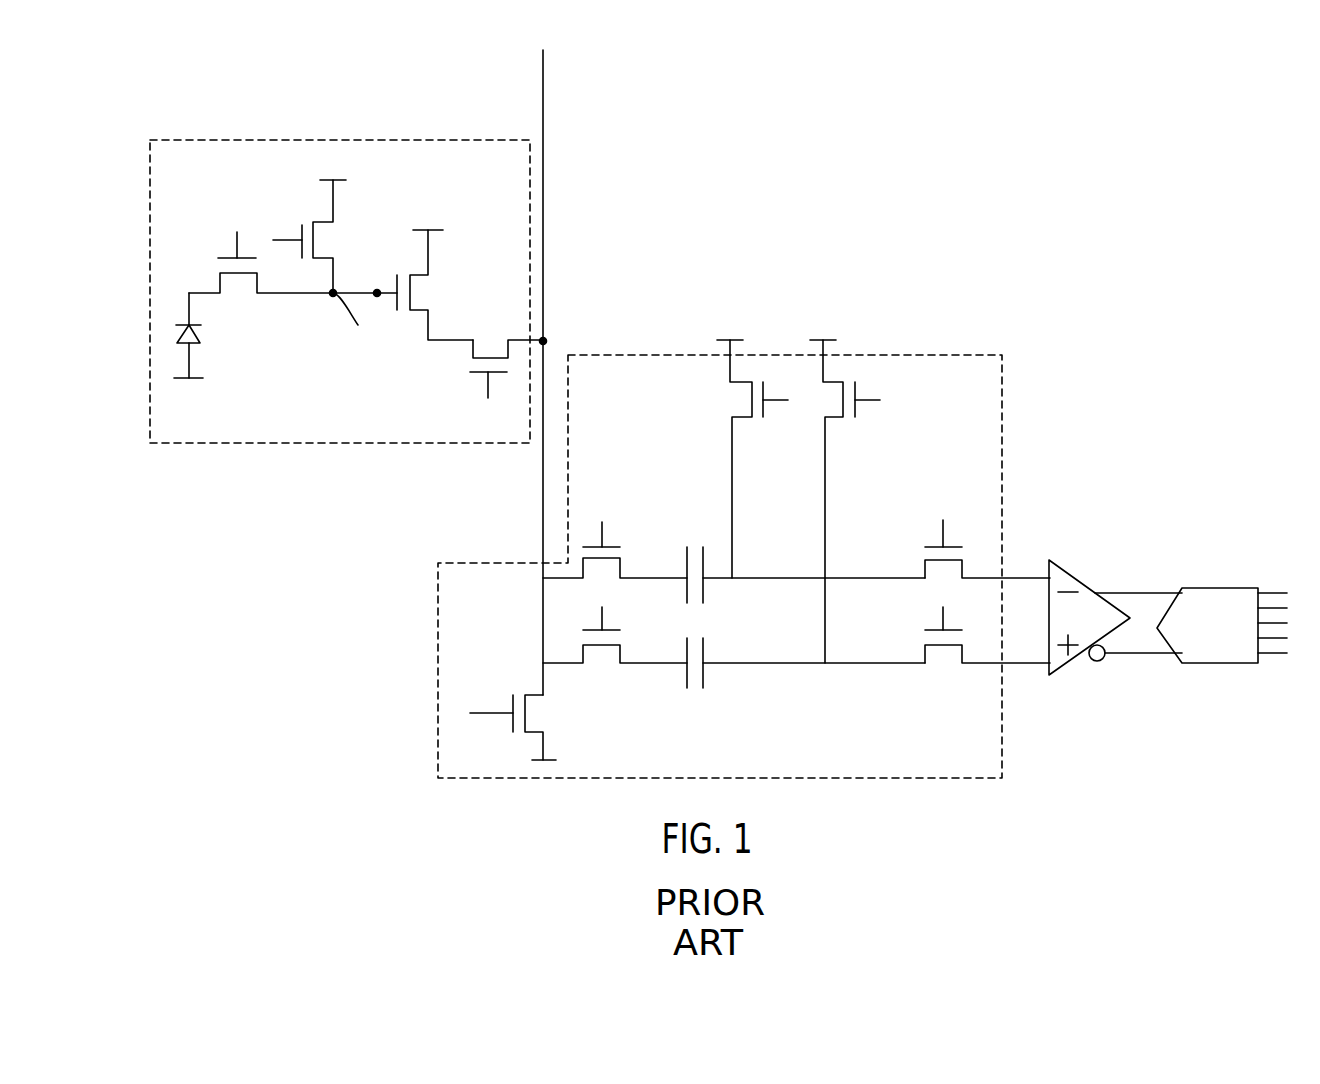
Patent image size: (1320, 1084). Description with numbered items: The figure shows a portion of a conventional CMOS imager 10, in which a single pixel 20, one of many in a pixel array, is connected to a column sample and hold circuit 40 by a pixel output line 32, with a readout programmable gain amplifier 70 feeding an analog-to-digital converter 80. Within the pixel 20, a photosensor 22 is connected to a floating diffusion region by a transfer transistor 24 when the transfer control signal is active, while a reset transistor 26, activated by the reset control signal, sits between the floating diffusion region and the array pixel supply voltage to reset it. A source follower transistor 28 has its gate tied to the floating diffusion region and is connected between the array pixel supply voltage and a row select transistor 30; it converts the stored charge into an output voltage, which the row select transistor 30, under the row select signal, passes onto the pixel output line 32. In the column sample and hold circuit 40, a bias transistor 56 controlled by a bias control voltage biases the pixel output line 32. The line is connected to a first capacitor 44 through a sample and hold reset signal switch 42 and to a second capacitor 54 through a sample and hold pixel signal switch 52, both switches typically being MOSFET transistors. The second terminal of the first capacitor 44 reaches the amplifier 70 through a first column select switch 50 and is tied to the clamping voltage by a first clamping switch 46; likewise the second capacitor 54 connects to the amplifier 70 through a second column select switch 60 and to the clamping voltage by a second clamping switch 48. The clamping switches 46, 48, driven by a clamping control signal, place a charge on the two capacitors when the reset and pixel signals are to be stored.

The CMOS imager 10 is at (940, 150).
The pixel 20 is at (317, 445).
The photosensor 22 is at (178, 335).
The transfer transistor 24 is at (217, 273).
The reset transistor 26 is at (310, 260).
The source follower transistor 28 is at (430, 275).
The row select transistor 30 is at (470, 358).
The pixel output line 32 is at (543, 293).
The column sample and hold circuit 40 is at (1003, 418).
The sample and hold reset signal switch 42 is at (625, 558).
The first capacitor 44 is at (694, 545).
The first clamping switch 46 is at (755, 420).
The second clamping switch 48 is at (845, 420).
The first column select switch 50 is at (922, 558).
The sample and hold pixel signal switch 52 is at (620, 665).
The second capacitor 54 is at (703, 685).
The bias transistor 56 is at (545, 730).
The second column select switch 60 is at (925, 665).
The readout programmable gain amplifier 70 is at (1060, 672).
The analog-to-digital converter 80 is at (1197, 665).